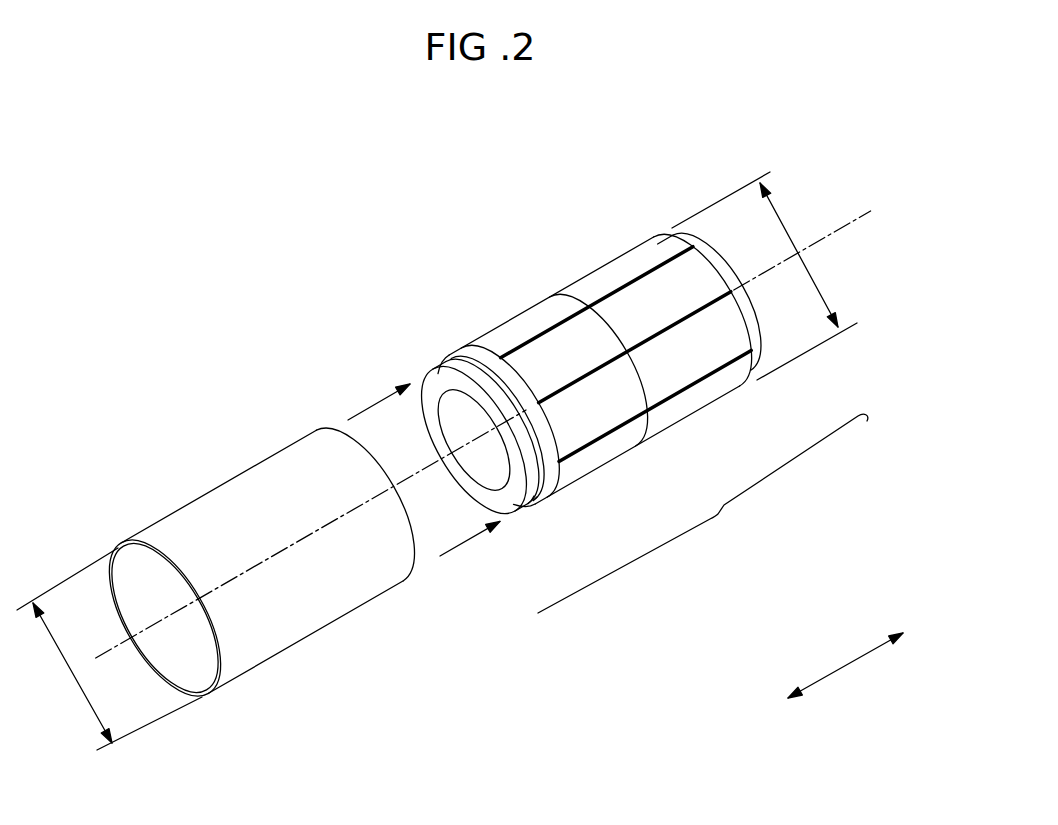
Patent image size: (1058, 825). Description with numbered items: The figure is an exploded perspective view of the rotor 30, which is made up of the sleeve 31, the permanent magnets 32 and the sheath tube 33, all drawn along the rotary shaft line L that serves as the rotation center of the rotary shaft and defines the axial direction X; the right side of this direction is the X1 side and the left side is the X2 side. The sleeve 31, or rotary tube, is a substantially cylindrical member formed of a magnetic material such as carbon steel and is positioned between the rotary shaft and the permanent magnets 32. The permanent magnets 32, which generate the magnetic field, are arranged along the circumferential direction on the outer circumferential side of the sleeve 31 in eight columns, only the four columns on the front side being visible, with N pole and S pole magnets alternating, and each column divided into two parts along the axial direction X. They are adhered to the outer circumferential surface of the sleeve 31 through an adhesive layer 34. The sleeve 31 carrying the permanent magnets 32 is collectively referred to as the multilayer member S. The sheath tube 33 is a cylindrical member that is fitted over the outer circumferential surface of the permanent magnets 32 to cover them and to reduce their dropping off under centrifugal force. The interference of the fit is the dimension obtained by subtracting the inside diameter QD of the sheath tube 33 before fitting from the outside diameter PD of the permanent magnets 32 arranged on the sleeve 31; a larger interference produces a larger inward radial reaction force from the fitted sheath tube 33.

The rotor 30 is at (621, 346).
The sleeve 31 is at (760, 352).
The permanent magnets 32 is at (673, 427).
The sheath tube 33 is at (287, 613).
The adhesive layer 34 is at (527, 498).
The rotary shaft line L is at (845, 222).
The outside diameter of the permanent magnets PD is at (764, 276).
The inside diameter of the sheath tube QD is at (109, 649).
The multilayer member S is at (703, 513).
The axial direction X is at (868, 655).
The X1 side X1 is at (923, 625).
The X2 side X2 is at (768, 709).